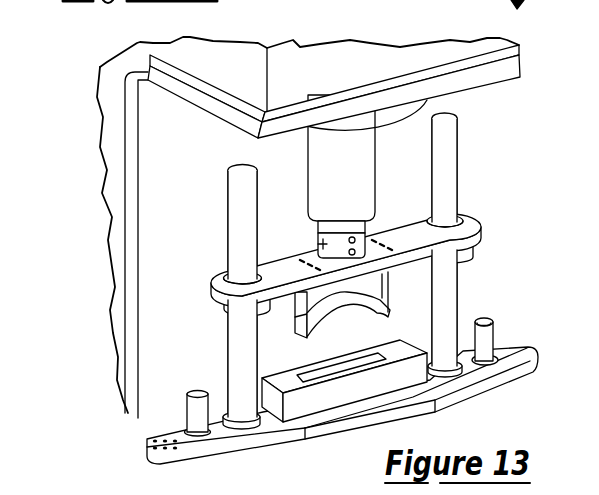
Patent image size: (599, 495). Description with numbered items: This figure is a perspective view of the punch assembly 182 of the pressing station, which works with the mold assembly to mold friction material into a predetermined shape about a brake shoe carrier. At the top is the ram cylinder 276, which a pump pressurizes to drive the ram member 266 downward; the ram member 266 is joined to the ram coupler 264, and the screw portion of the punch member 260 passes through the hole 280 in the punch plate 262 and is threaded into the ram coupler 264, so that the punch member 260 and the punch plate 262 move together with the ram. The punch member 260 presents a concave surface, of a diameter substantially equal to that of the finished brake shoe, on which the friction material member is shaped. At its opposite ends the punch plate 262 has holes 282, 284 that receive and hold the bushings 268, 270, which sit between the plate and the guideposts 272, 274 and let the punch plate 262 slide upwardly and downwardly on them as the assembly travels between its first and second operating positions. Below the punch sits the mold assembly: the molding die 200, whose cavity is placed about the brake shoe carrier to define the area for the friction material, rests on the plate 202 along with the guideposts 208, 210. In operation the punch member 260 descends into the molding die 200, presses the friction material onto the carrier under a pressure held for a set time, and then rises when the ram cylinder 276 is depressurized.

The punch assembly 182 is at (484, 131).
The molding die 200 is at (323, 403).
The plate 202 is at (533, 358).
The guidepost 208 is at (188, 402).
The guidepost 210 is at (494, 326).
The punch member 260 is at (258, 348).
The punch plate 262 is at (476, 231).
The ram coupler 264 is at (318, 247).
The ram member 266 is at (358, 189).
The bushing 268 is at (236, 308).
The bushing 270 is at (458, 258).
The guidepost 272 is at (228, 220).
The guidepost 274 is at (458, 157).
The ram cylinder 276 is at (383, 122).
The hole 280 is at (394, 256).
The hole 282 is at (213, 273).
The hole 284 is at (476, 224).